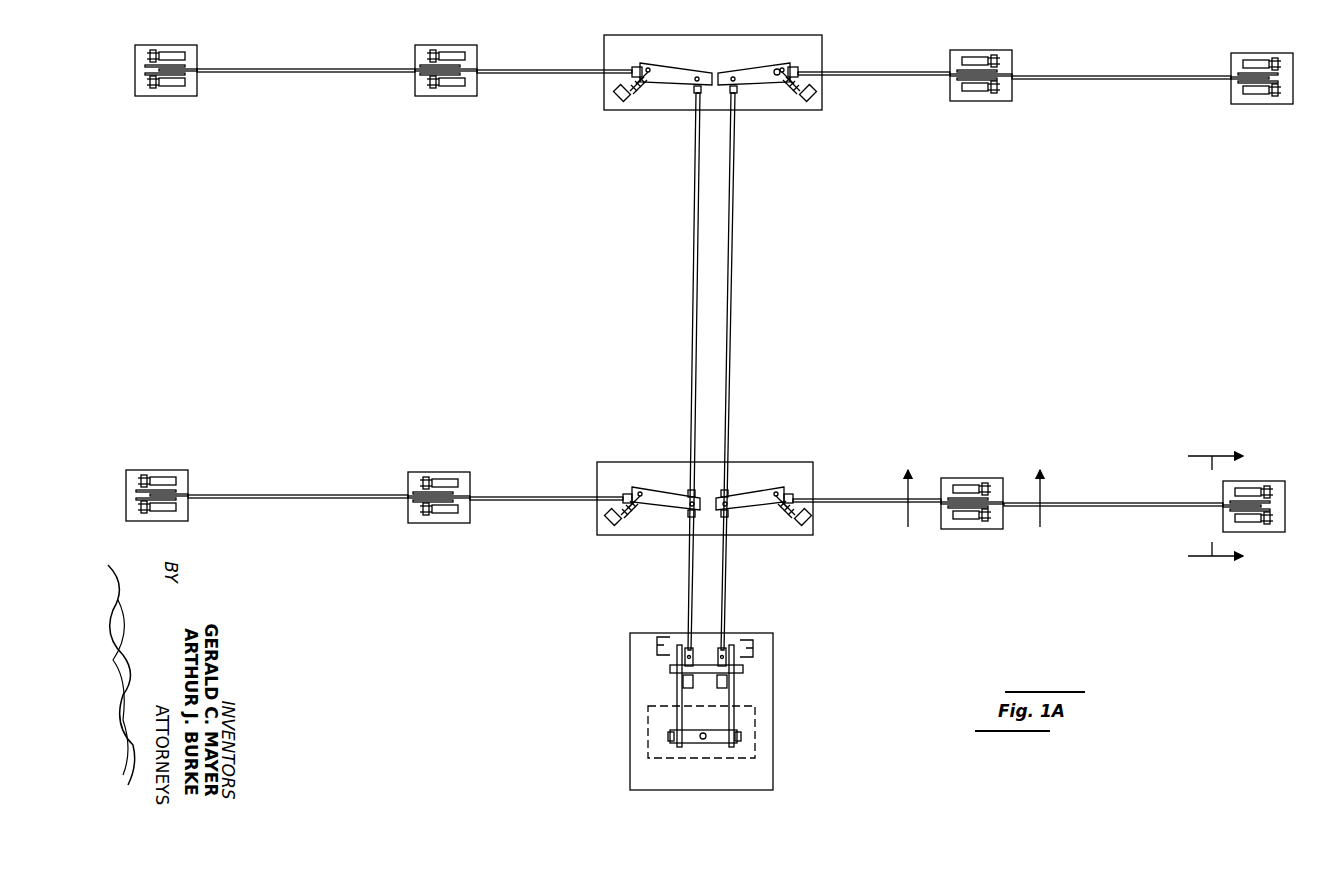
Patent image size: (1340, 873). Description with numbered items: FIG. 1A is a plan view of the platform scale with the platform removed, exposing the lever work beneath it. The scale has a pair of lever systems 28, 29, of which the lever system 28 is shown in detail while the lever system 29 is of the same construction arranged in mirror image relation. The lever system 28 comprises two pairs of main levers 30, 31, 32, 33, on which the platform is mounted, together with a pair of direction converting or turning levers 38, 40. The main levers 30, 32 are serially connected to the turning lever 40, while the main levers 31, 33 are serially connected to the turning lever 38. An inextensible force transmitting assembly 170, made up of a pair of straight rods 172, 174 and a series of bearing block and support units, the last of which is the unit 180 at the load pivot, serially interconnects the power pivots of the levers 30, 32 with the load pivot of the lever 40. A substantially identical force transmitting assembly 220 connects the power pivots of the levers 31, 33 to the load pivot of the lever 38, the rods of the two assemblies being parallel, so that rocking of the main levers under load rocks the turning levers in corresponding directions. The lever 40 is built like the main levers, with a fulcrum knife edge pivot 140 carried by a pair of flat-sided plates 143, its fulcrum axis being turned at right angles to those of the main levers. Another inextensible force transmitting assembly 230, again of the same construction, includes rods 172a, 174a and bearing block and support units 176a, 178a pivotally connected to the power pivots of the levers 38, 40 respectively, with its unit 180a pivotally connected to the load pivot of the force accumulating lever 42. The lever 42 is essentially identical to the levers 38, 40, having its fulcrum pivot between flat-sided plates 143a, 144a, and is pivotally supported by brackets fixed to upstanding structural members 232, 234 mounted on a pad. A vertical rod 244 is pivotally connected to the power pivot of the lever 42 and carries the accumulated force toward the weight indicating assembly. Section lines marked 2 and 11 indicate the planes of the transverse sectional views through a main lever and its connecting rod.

The section line 2- 2 is at (1215, 506).
The section line 11- 11 is at (973, 509).
The lever system 28 is at (1052, 514).
The lever system 29 is at (478, 524).
The main lever 30 is at (185, 493).
The main lever 31 is at (194, 77).
The main lever 32 is at (438, 490).
The main lever 33 is at (475, 80).
The direction converting lever 38 is at (668, 63).
The direction converting lever 40 is at (654, 480).
The force accumulating lever 42 is at (711, 689).
The fulcrum knife edge pivot 140 is at (636, 98).
The flat-sided plate 143 is at (772, 70).
The flat-sided plate 143a is at (676, 700).
The flat-sided plate 144a is at (735, 700).
The force transmitting assembly 170 is at (1162, 504).
The straight rod 172 is at (313, 73).
The straight rod 172a is at (694, 248).
The straight rod 174 is at (552, 74).
The straight rod 174a is at (727, 610).
The bearing block and support unit 176a is at (696, 93).
The bearing block and support unit 178a is at (690, 490).
The bearing block and support unit 180 is at (637, 67).
The bearing block and support unit 180a is at (745, 648).
The force transmitting assembly 220 is at (1060, 74).
The force transmitting assembly 230 is at (742, 316).
The upstanding structural member 232 is at (755, 653).
The upstanding structural member 234 is at (660, 636).
The vertical rod 244 is at (703, 744).